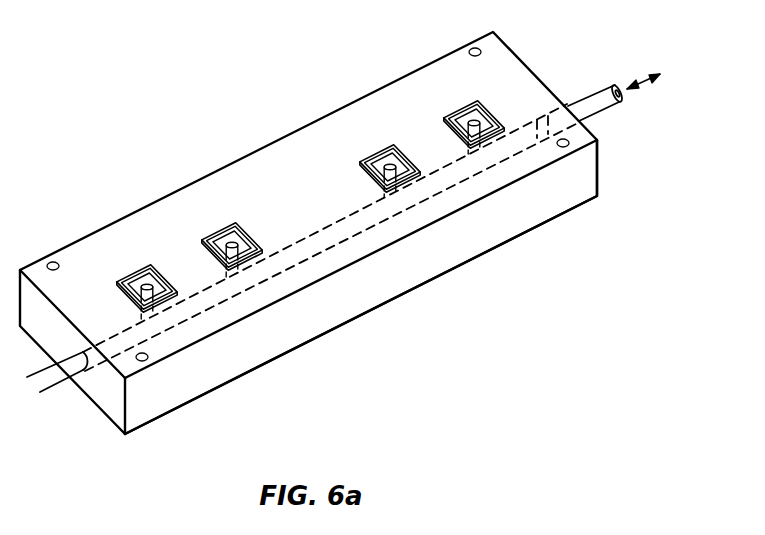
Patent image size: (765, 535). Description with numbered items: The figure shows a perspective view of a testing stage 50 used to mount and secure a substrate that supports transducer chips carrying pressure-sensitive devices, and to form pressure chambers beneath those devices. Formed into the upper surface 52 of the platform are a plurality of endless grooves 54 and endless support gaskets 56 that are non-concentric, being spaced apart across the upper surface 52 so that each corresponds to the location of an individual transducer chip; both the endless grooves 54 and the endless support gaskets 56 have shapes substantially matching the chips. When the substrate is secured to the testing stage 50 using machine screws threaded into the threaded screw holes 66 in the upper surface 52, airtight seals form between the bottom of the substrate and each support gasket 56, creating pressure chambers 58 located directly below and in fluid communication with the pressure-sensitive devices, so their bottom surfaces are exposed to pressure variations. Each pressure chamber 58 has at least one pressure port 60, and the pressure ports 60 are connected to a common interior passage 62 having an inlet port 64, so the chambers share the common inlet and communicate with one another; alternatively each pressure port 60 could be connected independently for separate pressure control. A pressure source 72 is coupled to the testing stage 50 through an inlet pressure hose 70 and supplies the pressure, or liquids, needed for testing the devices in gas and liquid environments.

The testing stage 50 is at (128, 91).
The upper surface 52 is at (345, 120).
The endless grooves 54 is at (248, 262).
The endless support gaskets 56 is at (360, 163).
The pressure chambers 58 is at (222, 233).
The pressure port 60 is at (390, 152).
The common interior passage 62 is at (452, 186).
The inlet port 64 is at (598, 132).
The threaded screw holes 66 is at (128, 364).
The inlet pressure hose 70 is at (620, 103).
The pressure source 72 is at (642, 80).